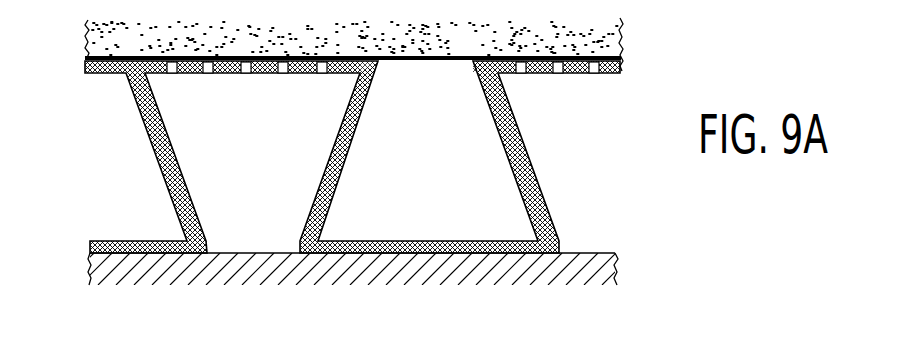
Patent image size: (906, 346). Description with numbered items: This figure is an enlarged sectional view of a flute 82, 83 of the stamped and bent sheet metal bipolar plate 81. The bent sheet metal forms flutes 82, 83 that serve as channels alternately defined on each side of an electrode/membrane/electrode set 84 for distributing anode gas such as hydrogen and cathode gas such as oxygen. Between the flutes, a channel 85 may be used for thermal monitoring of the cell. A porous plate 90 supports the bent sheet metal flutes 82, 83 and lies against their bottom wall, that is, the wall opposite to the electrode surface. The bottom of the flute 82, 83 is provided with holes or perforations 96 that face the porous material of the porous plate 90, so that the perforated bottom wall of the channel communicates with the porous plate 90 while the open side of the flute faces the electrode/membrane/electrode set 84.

The porous plate 90 is at (87, 40).
The stamped and bent sheet metal bipolar plate 81 is at (530, 168).
The flute 82 is at (232, 190).
The flute 83 is at (352, 196).
The electrode/membrane/electrode set 84 is at (137, 270).
The channel 85 is at (421, 215).
The holes 96 is at (172, 75).